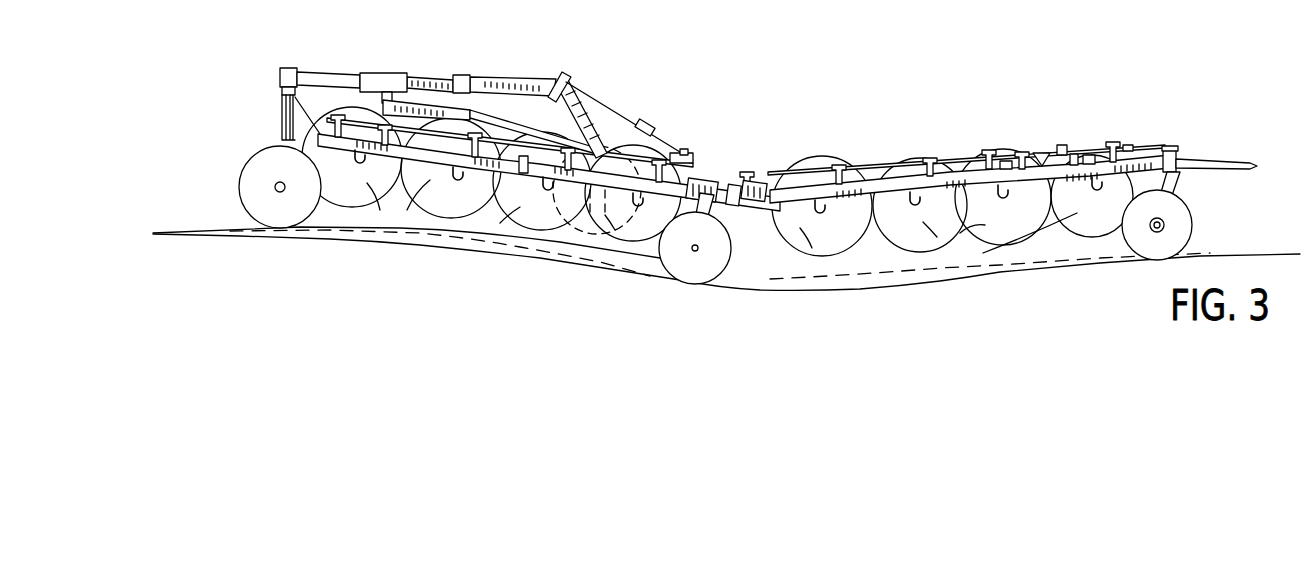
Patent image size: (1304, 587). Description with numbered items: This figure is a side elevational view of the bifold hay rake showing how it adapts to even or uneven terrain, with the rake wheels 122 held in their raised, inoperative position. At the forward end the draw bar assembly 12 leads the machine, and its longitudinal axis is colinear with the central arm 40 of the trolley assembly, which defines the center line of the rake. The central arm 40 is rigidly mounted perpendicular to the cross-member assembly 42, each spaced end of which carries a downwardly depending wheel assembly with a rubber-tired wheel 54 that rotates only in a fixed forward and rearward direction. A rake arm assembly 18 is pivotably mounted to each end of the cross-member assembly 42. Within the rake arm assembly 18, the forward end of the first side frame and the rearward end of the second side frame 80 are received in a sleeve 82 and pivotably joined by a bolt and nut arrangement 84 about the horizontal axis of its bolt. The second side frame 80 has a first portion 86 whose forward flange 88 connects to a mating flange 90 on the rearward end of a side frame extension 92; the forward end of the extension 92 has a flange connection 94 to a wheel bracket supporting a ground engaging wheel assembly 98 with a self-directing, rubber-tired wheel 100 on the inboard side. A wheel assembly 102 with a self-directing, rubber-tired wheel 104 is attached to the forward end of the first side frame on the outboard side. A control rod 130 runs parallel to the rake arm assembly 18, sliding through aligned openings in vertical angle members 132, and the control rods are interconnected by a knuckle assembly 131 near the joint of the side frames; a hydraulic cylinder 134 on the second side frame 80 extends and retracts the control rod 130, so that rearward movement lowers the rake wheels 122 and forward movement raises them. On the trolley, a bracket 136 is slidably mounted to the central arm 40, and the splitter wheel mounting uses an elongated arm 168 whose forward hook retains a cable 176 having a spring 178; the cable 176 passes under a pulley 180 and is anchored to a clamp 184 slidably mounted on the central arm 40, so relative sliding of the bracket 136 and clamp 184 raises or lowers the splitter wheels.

The draw bar assembly 12 is at (1233, 155).
The rake arm assembly 18 is at (863, 179).
The central arm 40 is at (333, 74).
The cross-member assembly 42 is at (273, 108).
The rubber-tired wheel 54 is at (275, 208).
The second side frame 80 is at (903, 178).
The sleeve 82 is at (750, 180).
The bolt and nut arrangement 84 is at (780, 177).
The first portion 86 is at (1003, 173).
The flange 88 is at (1090, 163).
The mating flange 90 is at (1087, 160).
The side frame extension 92 is at (1133, 157).
The flange connection 94 is at (1162, 147).
The ground engaging wheel assembly 98 is at (1197, 198).
The self-directing, rubber-tired wheel 100 is at (1170, 237).
The wheel assembly 102 is at (743, 267).
The self-directing, rubber-tired wheel 104 is at (693, 270).
The rake wheel 122 is at (430, 180).
The control rod 130 is at (907, 174).
The knuckle assembly 131 is at (767, 170).
The vertical angle member 132 is at (857, 167).
The hydraulic cylinder 134 is at (960, 173).
The bracket 136 is at (387, 73).
The elongated arm 168 is at (673, 155).
The cable 176 is at (610, 110).
The spring 178 is at (660, 133).
The pulley 180 is at (565, 77).
The clamp 184 is at (468, 75).